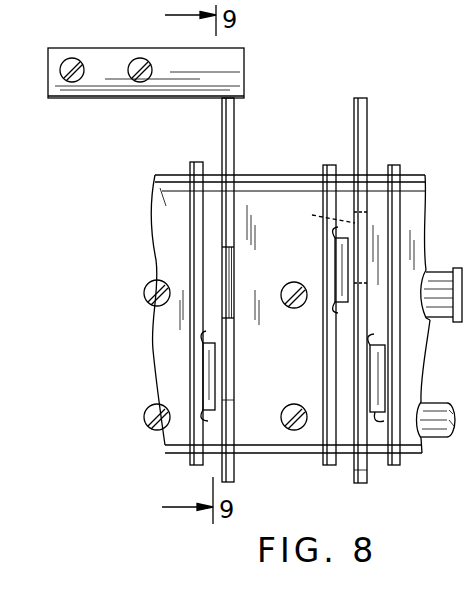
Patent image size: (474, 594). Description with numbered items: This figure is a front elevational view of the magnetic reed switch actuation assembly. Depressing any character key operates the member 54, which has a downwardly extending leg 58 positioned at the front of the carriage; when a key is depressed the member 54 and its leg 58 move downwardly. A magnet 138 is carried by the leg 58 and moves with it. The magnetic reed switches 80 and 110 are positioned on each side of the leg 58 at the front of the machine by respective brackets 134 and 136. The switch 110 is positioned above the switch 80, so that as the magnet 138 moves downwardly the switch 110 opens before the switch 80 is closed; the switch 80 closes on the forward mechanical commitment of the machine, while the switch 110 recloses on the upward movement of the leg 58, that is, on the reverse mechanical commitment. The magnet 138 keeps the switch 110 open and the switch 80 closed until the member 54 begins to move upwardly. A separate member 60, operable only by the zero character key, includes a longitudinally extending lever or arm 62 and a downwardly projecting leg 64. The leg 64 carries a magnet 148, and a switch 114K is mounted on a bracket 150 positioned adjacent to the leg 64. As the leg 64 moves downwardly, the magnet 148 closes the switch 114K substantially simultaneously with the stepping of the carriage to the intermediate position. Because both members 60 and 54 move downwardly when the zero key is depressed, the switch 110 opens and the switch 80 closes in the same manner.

The lever or arm 62 is at (145, 48).
The member 60 is at (240, 150).
The member 54 is at (368, 147).
The bracket 136 is at (336, 152).
The bracket 134 is at (393, 165).
The magnet 138 is at (325, 244).
The magnetic reed switch 110 is at (335, 258).
The magnet 148 is at (234, 286).
The magnetic reed switch 114K is at (216, 363).
The magnetic reed switch 80 is at (385, 360).
The leg 64 is at (235, 412).
The bracket 150 is at (195, 468).
The leg 58 is at (360, 483).